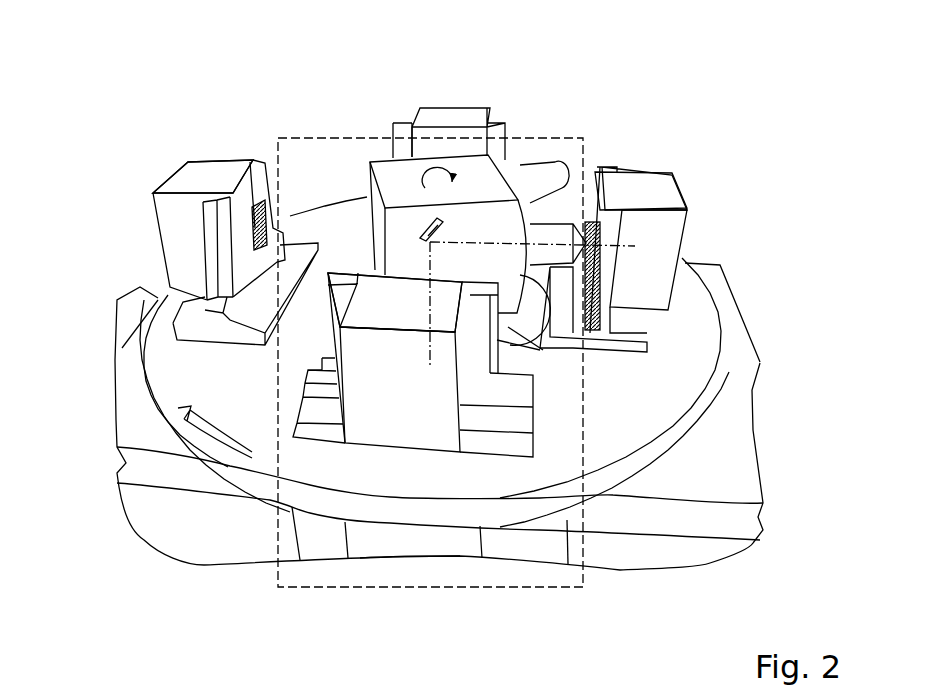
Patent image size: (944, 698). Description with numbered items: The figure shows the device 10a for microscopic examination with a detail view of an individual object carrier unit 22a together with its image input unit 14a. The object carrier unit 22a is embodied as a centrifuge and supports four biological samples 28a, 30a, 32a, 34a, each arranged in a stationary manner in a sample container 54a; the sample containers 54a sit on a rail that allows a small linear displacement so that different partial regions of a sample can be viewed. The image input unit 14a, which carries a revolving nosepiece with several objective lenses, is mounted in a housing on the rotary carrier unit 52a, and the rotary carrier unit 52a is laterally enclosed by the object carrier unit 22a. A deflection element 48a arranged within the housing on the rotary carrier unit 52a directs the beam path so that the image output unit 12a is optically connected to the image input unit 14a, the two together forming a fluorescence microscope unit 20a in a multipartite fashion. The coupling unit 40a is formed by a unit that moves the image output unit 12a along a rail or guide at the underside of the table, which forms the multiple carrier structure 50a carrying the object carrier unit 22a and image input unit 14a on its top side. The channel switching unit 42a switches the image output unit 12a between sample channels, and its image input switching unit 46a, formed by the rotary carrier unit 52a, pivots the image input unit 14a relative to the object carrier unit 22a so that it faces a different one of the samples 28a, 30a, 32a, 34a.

The device for microscopic examination 10a is at (198, 90).
The image output unit 12a is at (443, 548).
The image input unit 14a is at (513, 160).
The microscope unit 20a is at (597, 160).
The object carrier unit 22a is at (685, 296).
The sample 28a is at (633, 265).
The sample 30a is at (377, 398).
The sample 32a is at (185, 247).
The sample 34a is at (442, 153).
The coupling unit 40a is at (510, 328).
The channel switching unit 42a is at (518, 345).
The image input switching unit 46a is at (525, 338).
The deflection element 48a is at (425, 227).
The multiple carrier structure 50a is at (717, 477).
The rotary carrier unit 52a is at (500, 350).
The sample container 54a is at (188, 183).